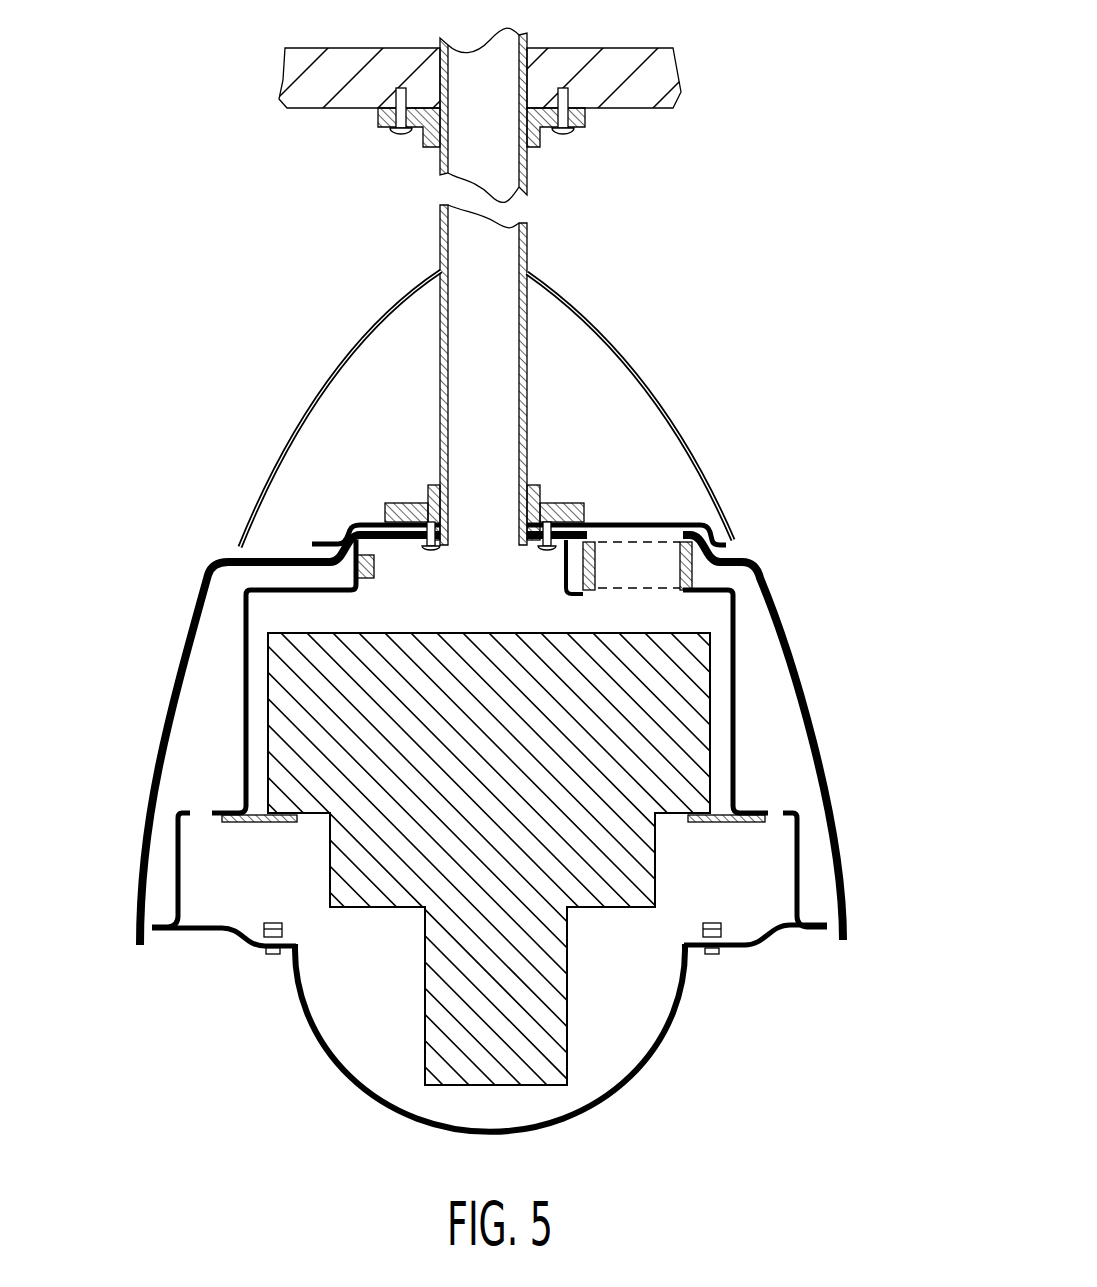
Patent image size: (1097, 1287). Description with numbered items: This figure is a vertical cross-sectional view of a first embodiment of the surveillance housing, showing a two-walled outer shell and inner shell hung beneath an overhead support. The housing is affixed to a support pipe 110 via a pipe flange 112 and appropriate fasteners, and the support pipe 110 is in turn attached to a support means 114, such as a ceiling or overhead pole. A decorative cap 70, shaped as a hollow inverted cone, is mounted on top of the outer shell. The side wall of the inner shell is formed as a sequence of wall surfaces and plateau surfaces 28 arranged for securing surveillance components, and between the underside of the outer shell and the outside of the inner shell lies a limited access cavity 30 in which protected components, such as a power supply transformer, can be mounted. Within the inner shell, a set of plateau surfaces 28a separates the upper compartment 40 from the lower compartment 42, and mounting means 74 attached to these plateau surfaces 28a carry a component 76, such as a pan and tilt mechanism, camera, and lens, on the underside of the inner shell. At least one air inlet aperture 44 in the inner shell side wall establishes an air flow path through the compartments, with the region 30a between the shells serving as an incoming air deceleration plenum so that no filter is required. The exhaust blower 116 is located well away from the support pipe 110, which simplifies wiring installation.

The support means 114 is at (658, 57).
The support pipe 110 is at (527, 242).
The decorative cap 70 is at (618, 355).
The plateau surfaces 28 is at (278, 585).
The pipe flange 112 is at (563, 487).
The exhaust blower 116 is at (620, 567).
The upper compartment 40 is at (508, 603).
The limited access cavity 30 is at (228, 714).
The set of plateau surfaces 28a is at (213, 805).
The air inlet aperture 44 is at (198, 802).
The incoming air deceleration plenum region 30a is at (160, 878).
The mounting means 74 is at (278, 823).
The lower compartment 42 is at (252, 916).
The component 76 is at (543, 1065).